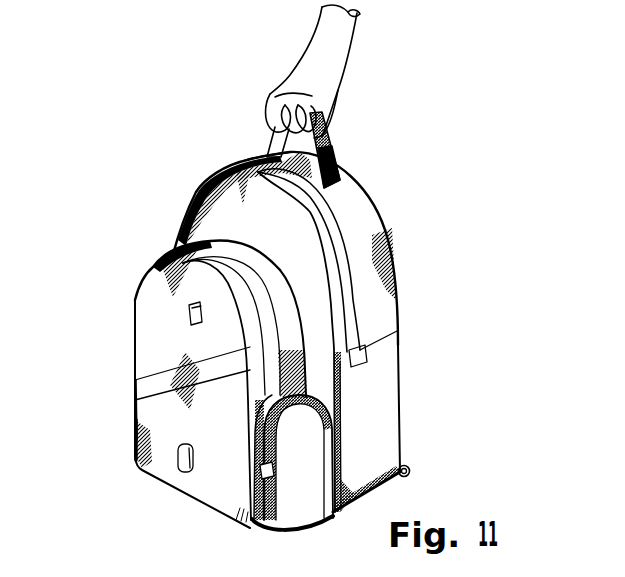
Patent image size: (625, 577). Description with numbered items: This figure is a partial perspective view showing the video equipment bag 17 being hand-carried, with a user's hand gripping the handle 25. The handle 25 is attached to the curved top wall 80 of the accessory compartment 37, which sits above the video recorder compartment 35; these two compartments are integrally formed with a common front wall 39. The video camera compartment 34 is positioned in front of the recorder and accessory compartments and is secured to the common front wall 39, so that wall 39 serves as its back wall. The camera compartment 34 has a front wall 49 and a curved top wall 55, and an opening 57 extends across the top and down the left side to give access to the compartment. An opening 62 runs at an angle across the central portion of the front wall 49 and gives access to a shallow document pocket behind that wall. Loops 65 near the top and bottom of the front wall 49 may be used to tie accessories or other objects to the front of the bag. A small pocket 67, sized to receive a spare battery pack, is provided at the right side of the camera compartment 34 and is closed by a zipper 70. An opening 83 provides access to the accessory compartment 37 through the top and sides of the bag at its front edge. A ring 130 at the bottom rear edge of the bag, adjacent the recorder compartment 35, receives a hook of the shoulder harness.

The video equipment bag 17 is at (119, 287).
The handle 25 is at (330, 152).
The video camera compartment 34 is at (195, 487).
The video recorder compartment 35 is at (383, 385).
The accessory compartment 37 is at (366, 212).
The common front wall 39 is at (194, 206).
The front wall 49 is at (138, 424).
The curved top wall 55 is at (224, 227).
The opening 57 is at (242, 291).
The opening 62 is at (207, 339).
The loops 65 is at (188, 320).
The small pocket 67 is at (310, 503).
The zipper 70 is at (280, 440).
The curved top wall 80 is at (238, 155).
The opening 83 is at (338, 236).
The ring 130 is at (406, 466).